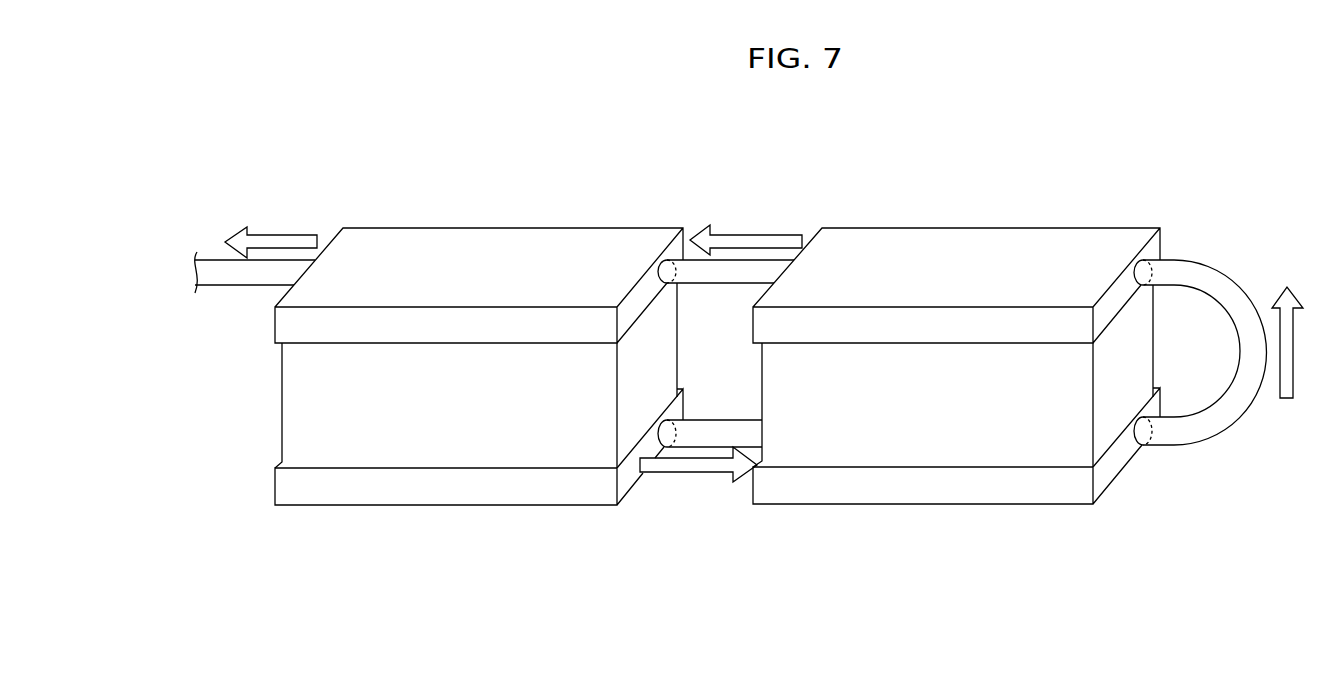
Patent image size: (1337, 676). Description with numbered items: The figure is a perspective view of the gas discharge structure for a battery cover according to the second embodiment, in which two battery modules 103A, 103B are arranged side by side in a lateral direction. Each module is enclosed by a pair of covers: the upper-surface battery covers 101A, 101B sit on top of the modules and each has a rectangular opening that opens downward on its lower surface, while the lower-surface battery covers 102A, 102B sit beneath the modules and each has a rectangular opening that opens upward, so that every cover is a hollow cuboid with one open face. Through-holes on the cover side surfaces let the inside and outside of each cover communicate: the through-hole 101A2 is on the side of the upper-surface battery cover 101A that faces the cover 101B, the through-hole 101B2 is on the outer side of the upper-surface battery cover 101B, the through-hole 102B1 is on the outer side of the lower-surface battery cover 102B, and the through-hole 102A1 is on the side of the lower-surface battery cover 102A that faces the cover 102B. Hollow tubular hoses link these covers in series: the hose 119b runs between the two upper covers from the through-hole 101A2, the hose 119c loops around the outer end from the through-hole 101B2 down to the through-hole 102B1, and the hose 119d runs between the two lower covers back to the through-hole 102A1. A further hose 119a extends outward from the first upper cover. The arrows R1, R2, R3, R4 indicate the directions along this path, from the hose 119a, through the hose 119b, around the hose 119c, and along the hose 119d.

The upper-surface battery cover 101A is at (488, 250).
The through-hole 101A2 is at (660, 260).
The lower-surface battery cover 102A is at (448, 492).
The through-hole 102A1 is at (672, 413).
The battery module 103A is at (510, 425).
The upper-surface battery cover 101B is at (963, 250).
The through-hole 101B2 is at (1142, 257).
The lower-surface battery cover 102B is at (925, 490).
The through-hole 102B1 is at (1140, 445).
The battery module 103B is at (987, 424).
The first strip portion 119a is at (237, 278).
The hose 119b is at (730, 277).
The hose 119c is at (1218, 288).
The hose 119d is at (752, 432).
The direction arrow R1 is at (271, 230).
The direction arrow R2 is at (746, 228).
The direction arrow R3 is at (1304, 342).
The direction arrow R4 is at (698, 478).